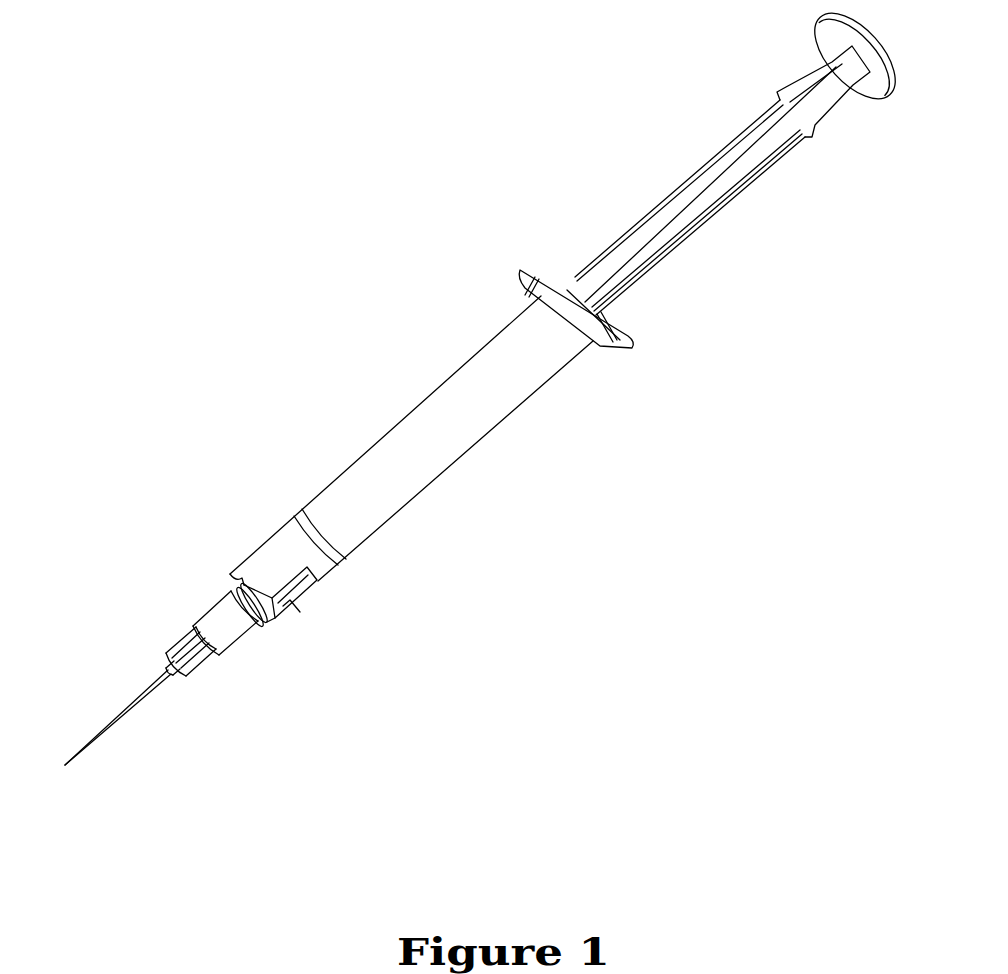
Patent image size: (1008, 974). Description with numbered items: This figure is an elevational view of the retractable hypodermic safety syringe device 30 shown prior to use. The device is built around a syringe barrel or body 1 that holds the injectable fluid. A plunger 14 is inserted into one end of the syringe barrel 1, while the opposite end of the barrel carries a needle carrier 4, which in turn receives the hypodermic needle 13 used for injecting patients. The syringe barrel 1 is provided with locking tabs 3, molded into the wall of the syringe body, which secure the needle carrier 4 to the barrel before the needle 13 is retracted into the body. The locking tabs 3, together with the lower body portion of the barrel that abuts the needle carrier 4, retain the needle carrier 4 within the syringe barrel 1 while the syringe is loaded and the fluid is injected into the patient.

The syringe barrel 1 is at (405, 473).
The locking tabs 3 is at (312, 587).
The needle carrier 4 is at (272, 618).
The hypodermic needle 13 is at (150, 693).
The plunger 14 is at (727, 202).
The retractable hypodermic safety syringe device 30 is at (487, 418).